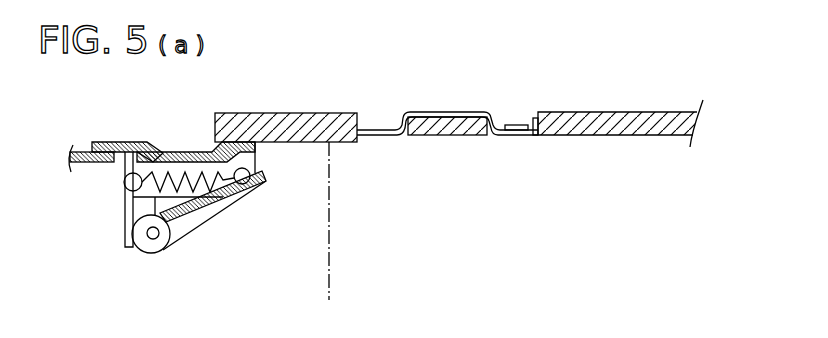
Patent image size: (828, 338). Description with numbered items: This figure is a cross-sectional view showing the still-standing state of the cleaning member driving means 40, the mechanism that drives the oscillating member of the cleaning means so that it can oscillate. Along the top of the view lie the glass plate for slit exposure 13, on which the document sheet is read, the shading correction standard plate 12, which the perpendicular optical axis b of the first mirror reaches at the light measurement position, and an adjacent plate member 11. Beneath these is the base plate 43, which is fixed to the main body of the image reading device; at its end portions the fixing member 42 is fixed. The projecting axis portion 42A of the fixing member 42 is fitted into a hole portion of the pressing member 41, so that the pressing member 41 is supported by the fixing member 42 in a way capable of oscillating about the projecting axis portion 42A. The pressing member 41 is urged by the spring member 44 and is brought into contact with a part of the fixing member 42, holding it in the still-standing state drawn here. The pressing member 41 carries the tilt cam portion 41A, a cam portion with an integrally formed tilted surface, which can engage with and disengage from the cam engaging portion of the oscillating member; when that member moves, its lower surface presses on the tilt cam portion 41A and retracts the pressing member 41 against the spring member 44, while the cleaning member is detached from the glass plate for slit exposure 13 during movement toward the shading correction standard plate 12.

The first plate member 11 is at (584, 112).
The shading correction standard plate 12 is at (451, 119).
The glass plate for slit exposure 13 is at (296, 114).
The cleaning member driving means 40 is at (256, 235).
The pressing member 41 is at (259, 186).
The tilt cam portion 41A is at (206, 206).
The fixing member 42 is at (122, 228).
The projecting axis portion 42A is at (157, 240).
The base plate 43 is at (148, 141).
The spring member 44 is at (185, 172).
The perpendicular optical axis b is at (330, 197).